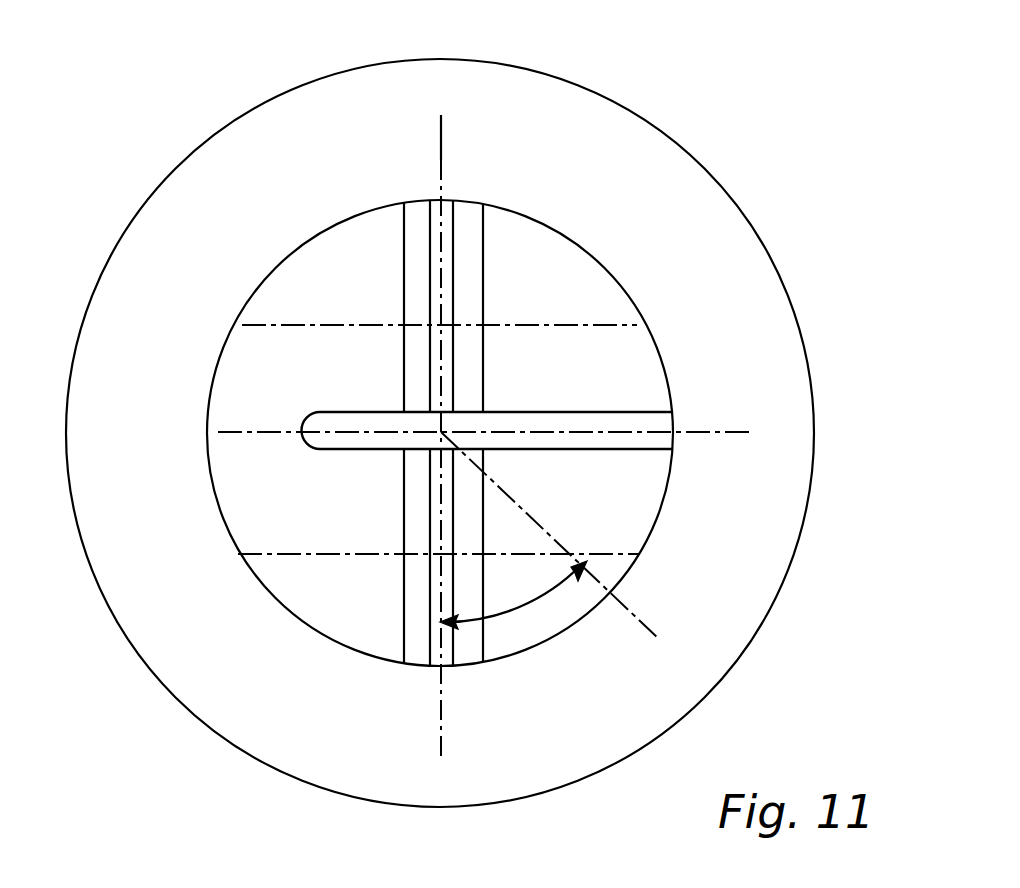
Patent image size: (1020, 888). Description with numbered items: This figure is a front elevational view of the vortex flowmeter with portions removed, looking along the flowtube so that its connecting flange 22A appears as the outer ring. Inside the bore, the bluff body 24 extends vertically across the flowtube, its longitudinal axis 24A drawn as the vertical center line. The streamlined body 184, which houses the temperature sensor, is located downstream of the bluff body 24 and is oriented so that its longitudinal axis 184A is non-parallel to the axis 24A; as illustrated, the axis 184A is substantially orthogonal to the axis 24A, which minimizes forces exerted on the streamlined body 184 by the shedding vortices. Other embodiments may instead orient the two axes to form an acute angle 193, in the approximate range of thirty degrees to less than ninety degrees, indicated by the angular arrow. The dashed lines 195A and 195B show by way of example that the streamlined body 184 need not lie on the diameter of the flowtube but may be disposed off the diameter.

The connecting flange 22A is at (500, 62).
The longitudinal axis of the bluff body 24A is at (441, 133).
The bluff body 24 is at (484, 250).
The dashed line 195A is at (502, 328).
The dashed line 195B is at (300, 556).
The streamlined body 184 is at (515, 412).
The longitudinal axis of the streamlined body 184A is at (737, 436).
The acute angle 193 is at (530, 608).